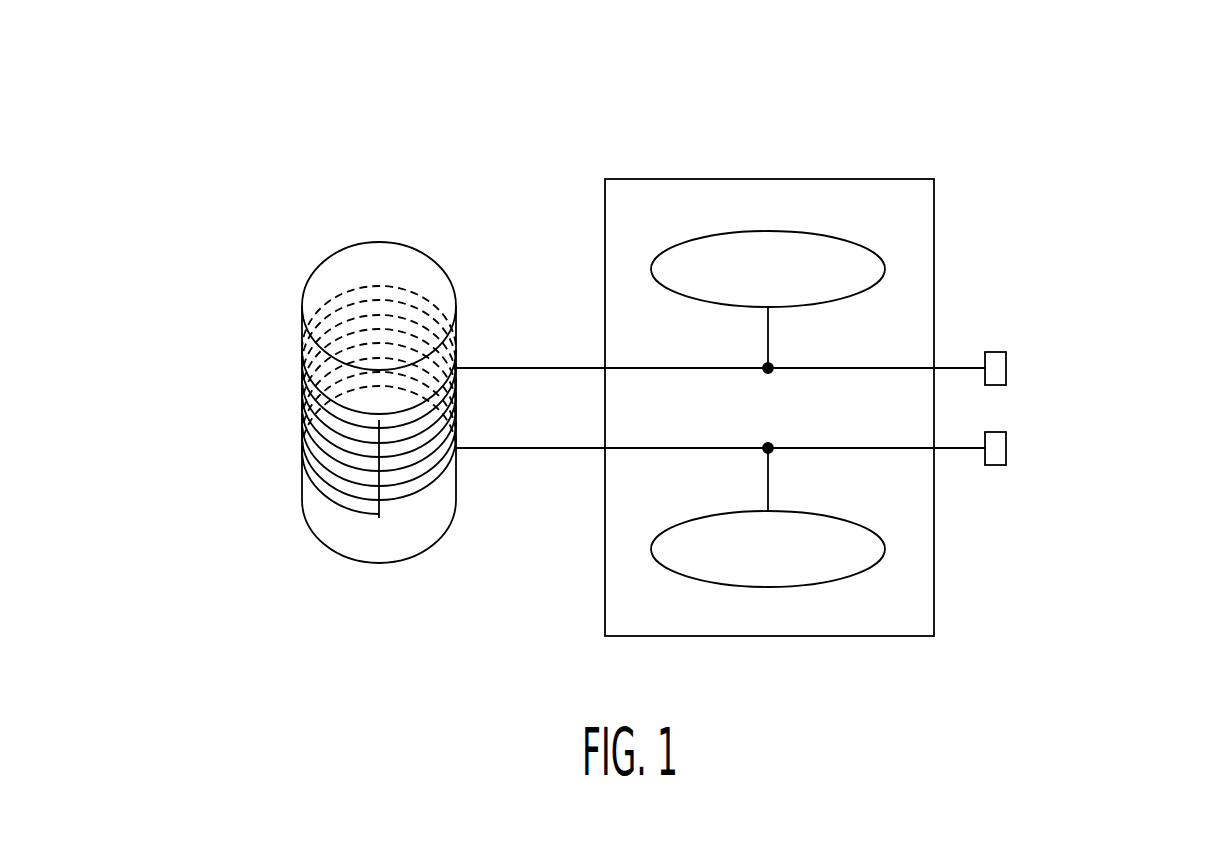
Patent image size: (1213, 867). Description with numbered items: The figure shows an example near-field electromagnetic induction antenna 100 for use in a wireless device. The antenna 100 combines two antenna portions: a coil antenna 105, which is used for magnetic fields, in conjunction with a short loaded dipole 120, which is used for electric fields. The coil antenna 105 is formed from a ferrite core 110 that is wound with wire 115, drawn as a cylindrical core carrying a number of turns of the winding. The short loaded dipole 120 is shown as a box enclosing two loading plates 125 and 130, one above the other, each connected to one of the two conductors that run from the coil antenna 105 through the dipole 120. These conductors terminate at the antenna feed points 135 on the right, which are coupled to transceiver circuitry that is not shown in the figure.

The near-field electromagnetic induction antenna 100 is at (407, 125).
The coil antenna 105 is at (301, 206).
The ferrite core 110 is at (305, 283).
The wire 115 is at (305, 435).
The short loaded dipole 120 is at (633, 179).
The loading plate 125 is at (885, 256).
The loading plate 130 is at (885, 548).
The feed points 135 is at (1006, 369).